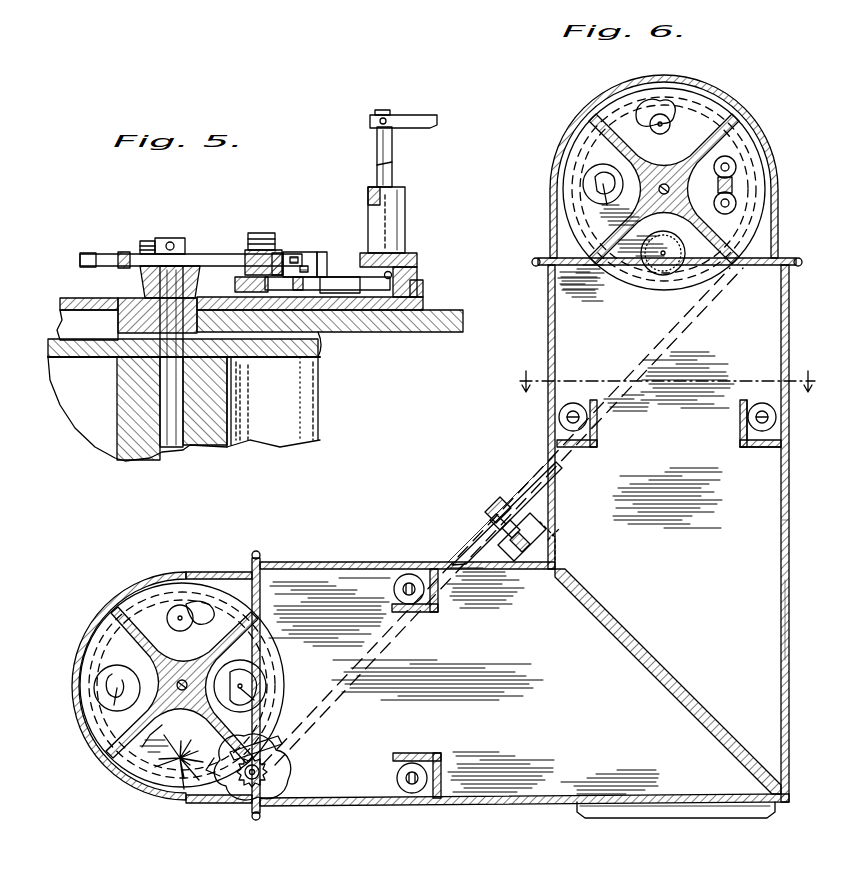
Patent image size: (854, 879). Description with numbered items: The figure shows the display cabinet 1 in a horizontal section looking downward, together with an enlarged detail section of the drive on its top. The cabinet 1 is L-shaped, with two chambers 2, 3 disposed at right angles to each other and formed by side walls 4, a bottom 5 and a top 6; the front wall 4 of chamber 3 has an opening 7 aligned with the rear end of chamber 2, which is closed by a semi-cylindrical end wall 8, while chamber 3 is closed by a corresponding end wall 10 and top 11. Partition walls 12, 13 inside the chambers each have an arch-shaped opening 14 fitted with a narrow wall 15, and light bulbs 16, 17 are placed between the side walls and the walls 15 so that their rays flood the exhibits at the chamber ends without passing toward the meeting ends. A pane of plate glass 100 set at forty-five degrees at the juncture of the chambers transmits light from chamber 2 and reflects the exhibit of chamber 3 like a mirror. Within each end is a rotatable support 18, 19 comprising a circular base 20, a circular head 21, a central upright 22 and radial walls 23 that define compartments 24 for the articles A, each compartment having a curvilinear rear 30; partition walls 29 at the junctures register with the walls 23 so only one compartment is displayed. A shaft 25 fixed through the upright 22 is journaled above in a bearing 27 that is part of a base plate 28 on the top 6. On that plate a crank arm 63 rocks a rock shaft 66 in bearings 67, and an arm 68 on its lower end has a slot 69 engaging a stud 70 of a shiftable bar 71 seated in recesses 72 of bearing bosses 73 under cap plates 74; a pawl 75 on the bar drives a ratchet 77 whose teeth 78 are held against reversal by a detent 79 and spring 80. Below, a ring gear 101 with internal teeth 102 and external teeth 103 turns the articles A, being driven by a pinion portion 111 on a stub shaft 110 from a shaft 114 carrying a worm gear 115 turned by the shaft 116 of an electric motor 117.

In FIG. 6, the cabinet 1 is at (786, 528).
In FIG. 6, the chamber 2 is at (766, 352).
In FIG. 6, the chamber 3 is at (352, 806).
In FIG. 6, the side walls 4 is at (556, 362).
In FIG. 6, the bottom 5 is at (760, 600).
In FIG. 5, the top 6 is at (450, 332).
In FIG. 6, the opening 7 is at (718, 826).
In FIG. 6, the end wall 8 is at (760, 142).
In FIG. 5, the end wall 10 is at (87, 325).
In FIG. 6, the end wall 10 is at (180, 572).
In FIG. 5, the top 11 is at (80, 298).
In FIG. 6, the partition wall 12 is at (760, 450).
In FIG. 6, the partition wall 13 is at (444, 782).
In FIG. 6, the opening 14 is at (744, 449).
In FIG. 6, the wall 15 is at (758, 416).
In FIG. 6, the light bulb 16 is at (576, 404).
In FIG. 6, the light bulb 17 is at (410, 606).
In FIG. 6, the rotatable support 18 is at (616, 264).
In FIG. 5, the rotatable support 19 is at (271, 426).
In FIG. 6, the rotatable support 19 is at (262, 656).
In FIG. 6, the circular base 20 is at (700, 285).
In FIG. 5, the circular head 21 is at (286, 357).
In FIG. 5, the central upright 22 is at (232, 425).
In FIG. 6, the central upright 22 is at (678, 165).
In FIG. 5, the radial walls 23 is at (290, 430).
In FIG. 6, the radial walls 23 is at (727, 214).
In FIG. 5, the compartments 24 is at (246, 448).
In FIG. 6, the compartments 24 is at (668, 276).
In FIG. 5, the shaft 25 is at (172, 448).
In FIG. 6, the shaft 25 is at (664, 170).
In FIG. 5, the bearing 27 is at (128, 304).
In FIG. 5, the base plate 28 is at (423, 293).
In FIG. 6, the partition wall 29 is at (760, 268).
In FIG. 5, the transversely curvilinear rear 30 is at (214, 422).
In FIG. 6, the transversely curvilinear rear 30 is at (657, 206).
In FIG. 5, the crank arm 63 is at (418, 116).
In FIG. 5, the rock shaft 66 is at (392, 158).
In FIG. 5, the bearing 67 is at (405, 228).
In FIG. 5, the arm 68 is at (330, 277).
In FIG. 5, the longitudinal slot 69 is at (300, 262).
In FIG. 5, the stud 70 is at (236, 284).
In FIG. 5, the shiftable bar 71 is at (278, 253).
In FIG. 5, the recesses 72 is at (196, 268).
In FIG. 5, the bearing bosses 73 is at (340, 277).
In FIG. 5, the cap plates 74 is at (322, 252).
In FIG. 5, the pawl 75 is at (256, 250).
In FIG. 5, the ratchet 77 is at (172, 246).
In FIG. 5, the teeth 78 is at (124, 253).
In FIG. 5, the detent 79 is at (92, 254).
In FIG. 5, the spring 80 is at (147, 241).
In FIG. 6, the pane of plate glass 100 is at (658, 664).
In FIG. 6, the ring gear 101 is at (272, 760).
In FIG. 6, the internal teeth 102 is at (228, 778).
In FIG. 6, the external teeth 103 is at (286, 740).
In FIG. 6, the stub shaft 110 is at (262, 790).
In FIG. 6, the vertical toothed portion 111 is at (259, 775).
In FIG. 6, the shaft 114 is at (458, 554).
In FIG. 6, the worm gear 115 is at (496, 505).
In FIG. 6, the motor shaft 116 is at (480, 528).
In FIG. 6, the motor 117 is at (556, 530).
In FIG. 6, the articles A is at (586, 182).